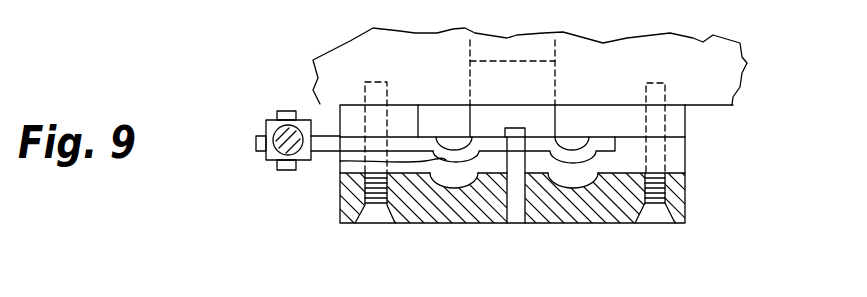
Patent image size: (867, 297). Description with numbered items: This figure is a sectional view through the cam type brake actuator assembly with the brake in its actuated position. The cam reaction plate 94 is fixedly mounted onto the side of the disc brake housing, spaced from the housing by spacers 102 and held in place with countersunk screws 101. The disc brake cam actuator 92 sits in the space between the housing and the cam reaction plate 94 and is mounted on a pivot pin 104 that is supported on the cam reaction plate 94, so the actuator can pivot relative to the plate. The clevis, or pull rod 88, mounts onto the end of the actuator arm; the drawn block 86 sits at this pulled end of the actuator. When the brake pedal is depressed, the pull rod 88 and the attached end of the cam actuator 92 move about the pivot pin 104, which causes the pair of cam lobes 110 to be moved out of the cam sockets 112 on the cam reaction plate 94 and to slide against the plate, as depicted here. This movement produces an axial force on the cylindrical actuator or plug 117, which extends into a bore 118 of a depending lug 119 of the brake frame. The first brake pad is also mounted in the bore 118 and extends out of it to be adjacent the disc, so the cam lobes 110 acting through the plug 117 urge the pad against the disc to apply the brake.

The slide block 86 is at (262, 131).
The clevis 88 is at (270, 127).
The disc brake cam actuator 92 is at (375, 143).
The cam reaction plate 94 is at (613, 212).
The countersunk screws 101 is at (380, 212).
The spacers 102 is at (338, 117).
The pivot pin 104 is at (513, 212).
The cam lobes 110 is at (340, 161).
The cam sockets 112 is at (587, 226).
The cylindrical actuator or plug 117 is at (572, 145).
The bore 118 is at (469, 82).
The depending lug 119 is at (723, 63).